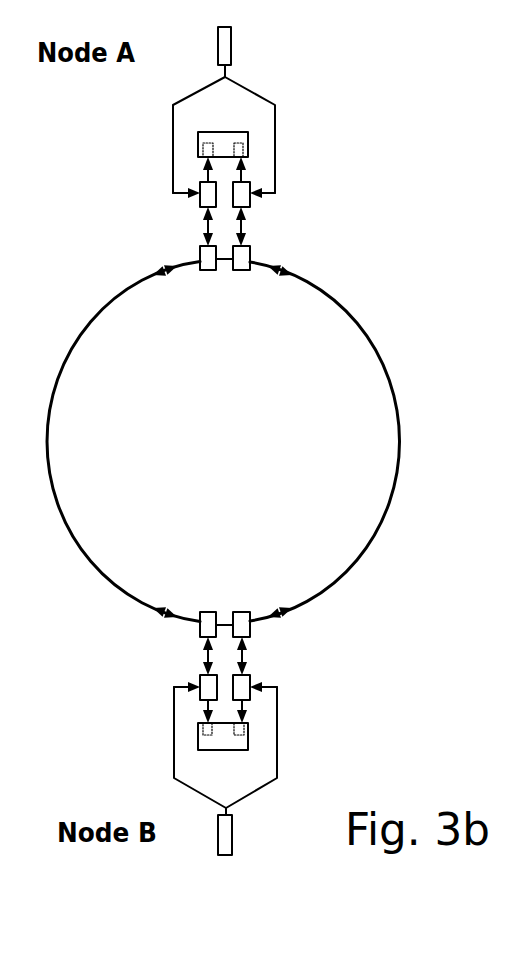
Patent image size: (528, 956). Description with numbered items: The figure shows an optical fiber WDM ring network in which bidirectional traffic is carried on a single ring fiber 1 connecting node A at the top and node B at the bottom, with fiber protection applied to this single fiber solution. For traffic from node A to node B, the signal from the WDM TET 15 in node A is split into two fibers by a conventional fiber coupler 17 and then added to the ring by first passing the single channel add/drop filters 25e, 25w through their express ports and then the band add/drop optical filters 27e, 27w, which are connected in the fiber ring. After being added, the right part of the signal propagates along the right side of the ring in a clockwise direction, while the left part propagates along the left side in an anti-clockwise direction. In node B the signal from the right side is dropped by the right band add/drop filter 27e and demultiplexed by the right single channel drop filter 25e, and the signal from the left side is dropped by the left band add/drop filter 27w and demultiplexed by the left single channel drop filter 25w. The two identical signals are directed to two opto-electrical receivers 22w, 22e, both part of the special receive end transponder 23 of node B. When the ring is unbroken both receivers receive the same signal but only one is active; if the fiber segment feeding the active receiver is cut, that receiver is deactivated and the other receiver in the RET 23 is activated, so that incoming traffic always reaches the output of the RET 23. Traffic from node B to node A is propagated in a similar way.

The single ring fiber 1 is at (338, 302).
The WDM TET 15 is at (218, 50).
The fiber coupler 17 is at (225, 70).
The opto-electrical receiver 22e is at (250, 728).
The opto-electrical receiver 22w is at (200, 733).
The receive end transponder (RET) 23 is at (248, 134).
The single channel add/drop filter 25e is at (200, 207).
The single channel add/drop filter 25w is at (249, 199).
The band add/drop optical filter 27e is at (208, 270).
The band add/drop optical filter 27w is at (241, 270).